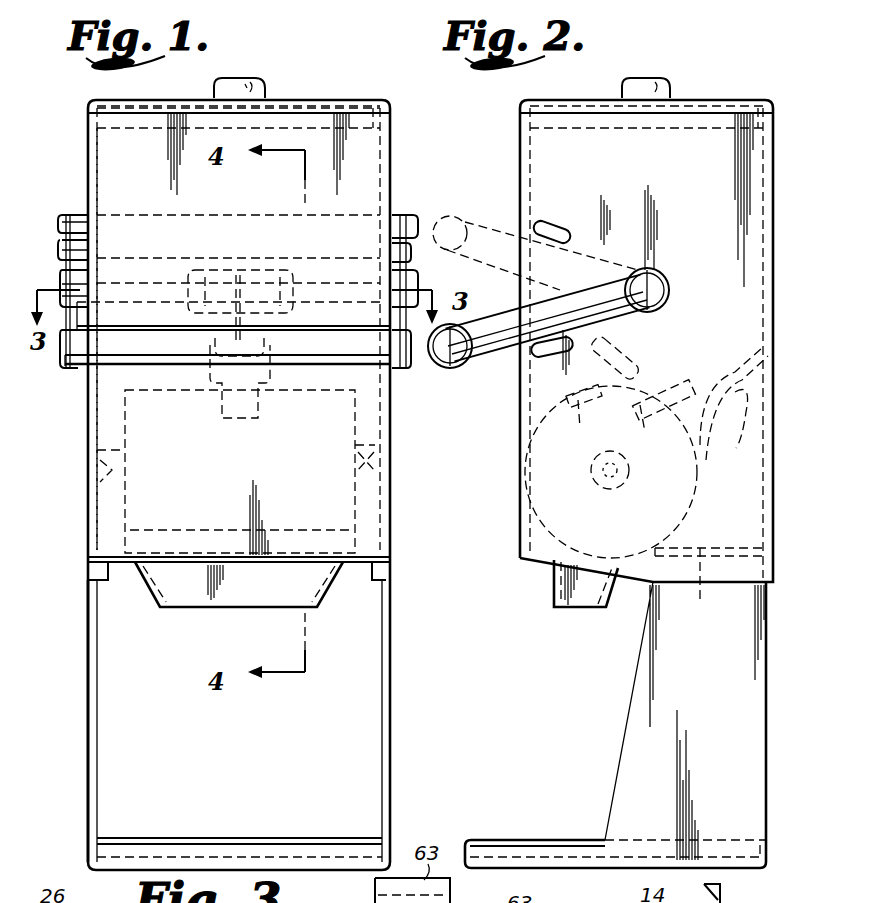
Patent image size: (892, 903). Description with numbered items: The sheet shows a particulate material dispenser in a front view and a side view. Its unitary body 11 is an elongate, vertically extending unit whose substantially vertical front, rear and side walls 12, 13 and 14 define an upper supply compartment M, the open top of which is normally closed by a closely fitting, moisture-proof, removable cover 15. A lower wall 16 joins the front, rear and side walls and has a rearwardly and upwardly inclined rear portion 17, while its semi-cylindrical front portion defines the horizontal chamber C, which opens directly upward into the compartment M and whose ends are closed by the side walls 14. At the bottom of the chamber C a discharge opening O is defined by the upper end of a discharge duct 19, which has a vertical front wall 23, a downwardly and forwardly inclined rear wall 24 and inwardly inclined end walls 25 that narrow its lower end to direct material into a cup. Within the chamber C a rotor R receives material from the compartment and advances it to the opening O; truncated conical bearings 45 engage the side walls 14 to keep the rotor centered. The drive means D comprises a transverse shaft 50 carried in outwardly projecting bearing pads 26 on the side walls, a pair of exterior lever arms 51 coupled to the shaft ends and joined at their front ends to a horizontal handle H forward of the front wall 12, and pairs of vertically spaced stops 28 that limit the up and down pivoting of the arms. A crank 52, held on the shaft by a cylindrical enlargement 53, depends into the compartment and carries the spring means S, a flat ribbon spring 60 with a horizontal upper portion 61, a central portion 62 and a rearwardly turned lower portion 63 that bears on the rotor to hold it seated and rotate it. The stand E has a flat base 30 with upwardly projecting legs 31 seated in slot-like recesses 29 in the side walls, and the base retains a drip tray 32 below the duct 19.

In FIG. 1, the unitary body 11 is at (350, 115).
In FIG. 2, the unitary body 11 is at (712, 117).
In FIG. 1, the front wall 12 is at (97, 142).
In FIG. 2, the front wall 12 is at (520, 135).
In FIG. 2, the rear wall 13 is at (778, 112).
In FIG. 1, the side walls 14 is at (88, 170).
In FIG. 2, the side walls 14 is at (680, 151).
In FIG. 1, the cover 15 is at (296, 100).
In FIG. 2, the cover 15 is at (690, 100).
In FIG. 2, the lower wall 16 is at (737, 394).
In FIG. 2, the rear portion 17 is at (747, 455).
In FIG. 1, the discharge duct 19 is at (183, 596).
In FIG. 2, the discharge duct 19 is at (554, 597).
In FIG. 1, the front wall 23 is at (203, 600).
In FIG. 2, the front wall 23 is at (550, 580).
In FIG. 2, the rear wall 24 is at (620, 600).
In FIG. 1, the end walls 25 is at (162, 600).
In FIG. 2, the end walls 25 is at (600, 614).
In FIG. 1, the bearing pads 26 is at (395, 285).
In FIG. 1, the stops 28 is at (78, 215).
In FIG. 2, the stops 28 is at (562, 228).
In FIG. 2, the recesses 29 is at (710, 582).
In FIG. 1, the base 30 is at (134, 852).
In FIG. 2, the base 30 is at (508, 848).
In FIG. 1, the legs 31 is at (88, 708).
In FIG. 2, the legs 31 is at (636, 716).
In FIG. 1, the drip tray 32 is at (238, 822).
In FIG. 2, the drip tray 32 is at (556, 841).
In FIG. 1, the bearings 45 is at (380, 460).
In FIG. 1, the shaft 50 is at (198, 275).
In FIG. 1, the lever arms 51 is at (78, 320).
In FIG. 2, the lever arms 51 is at (608, 282).
In FIG. 2, the crank 52 is at (660, 318).
In FIG. 1, the cylindrical enlargement 53 is at (284, 272).
In FIG. 2, the spring 60 is at (651, 380).
In FIG. 2, the upper portion 61 is at (606, 444).
In FIG. 2, the central portion 62 is at (648, 433).
In FIG. 2, the lower portion 63 is at (578, 427).
In FIG. 1, the chamber C is at (99, 520).
In FIG. 1, the drive means D is at (80, 370).
In FIG. 2, the drive means D is at (494, 320).
In FIG. 1, the stand E is at (100, 805).
In FIG. 2, the stand E is at (626, 749).
In FIG. 1, the handle H is at (158, 332).
In FIG. 2, the handle H is at (455, 368).
In FIG. 1, the supply compartment M is at (358, 158).
In FIG. 2, the supply compartment M is at (610, 138).
In FIG. 1, the discharge opening O is at (134, 554).
In FIG. 2, the discharge opening O is at (610, 529).
In FIG. 1, the rotor R is at (134, 432).
In FIG. 2, the rotor R is at (546, 432).
In FIG. 1, the spring means S is at (222, 420).
In FIG. 2, the spring means S is at (680, 387).